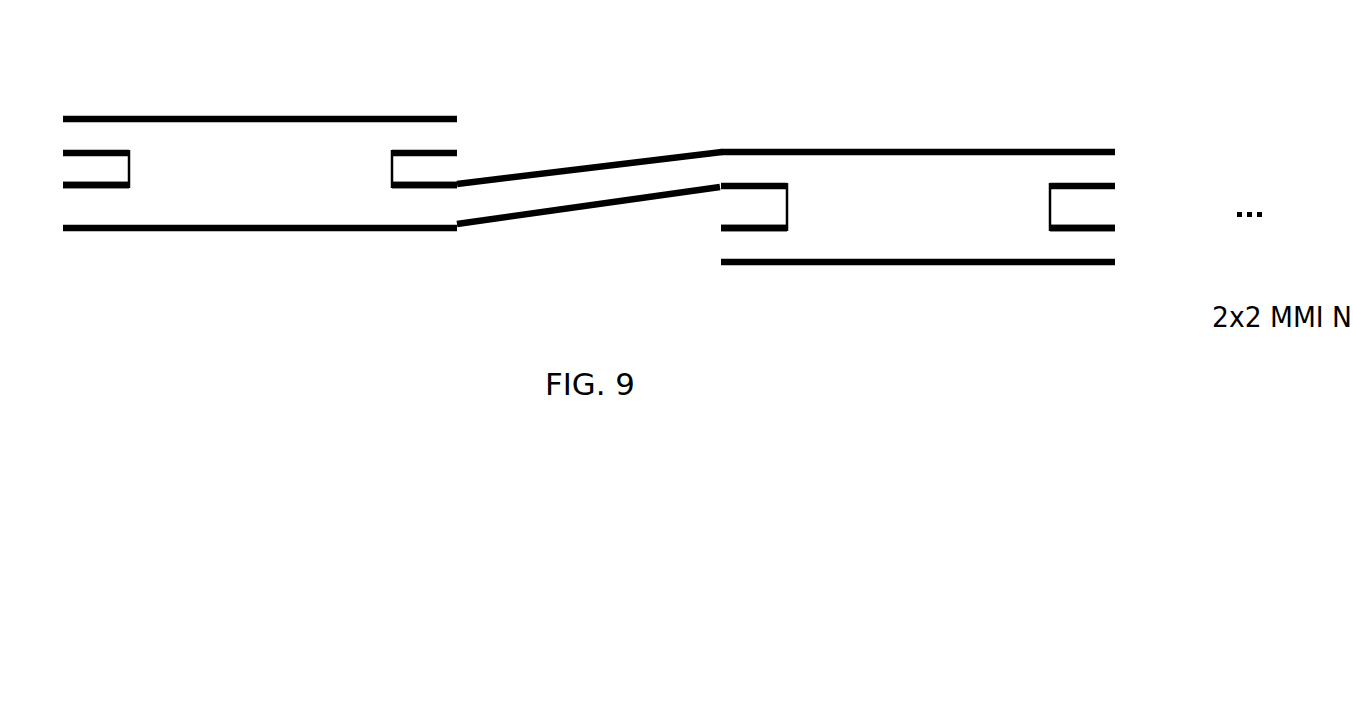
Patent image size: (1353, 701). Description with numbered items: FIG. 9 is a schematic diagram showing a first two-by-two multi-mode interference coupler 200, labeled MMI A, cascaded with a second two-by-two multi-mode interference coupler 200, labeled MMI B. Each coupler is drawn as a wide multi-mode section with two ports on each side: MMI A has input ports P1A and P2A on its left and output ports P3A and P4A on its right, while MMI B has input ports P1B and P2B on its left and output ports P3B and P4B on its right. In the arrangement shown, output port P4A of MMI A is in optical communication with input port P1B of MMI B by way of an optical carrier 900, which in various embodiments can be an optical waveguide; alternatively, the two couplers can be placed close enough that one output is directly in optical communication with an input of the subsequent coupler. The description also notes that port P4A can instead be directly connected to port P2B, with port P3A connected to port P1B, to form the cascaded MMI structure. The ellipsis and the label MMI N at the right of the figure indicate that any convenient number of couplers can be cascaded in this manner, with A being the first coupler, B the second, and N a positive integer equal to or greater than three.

The 2×2 multi-mode interference coupler 200 is at (589, 184).
The optical carrier 900 is at (562, 168).
The input port P1A is at (96, 155).
The input port P2A is at (96, 204).
The output port P3A is at (424, 155).
The output port P4A is at (424, 204).
The input port P1B is at (754, 193).
The input port P2B is at (754, 242).
The output port P3B is at (1082, 193).
The output port P4B is at (1082, 242).